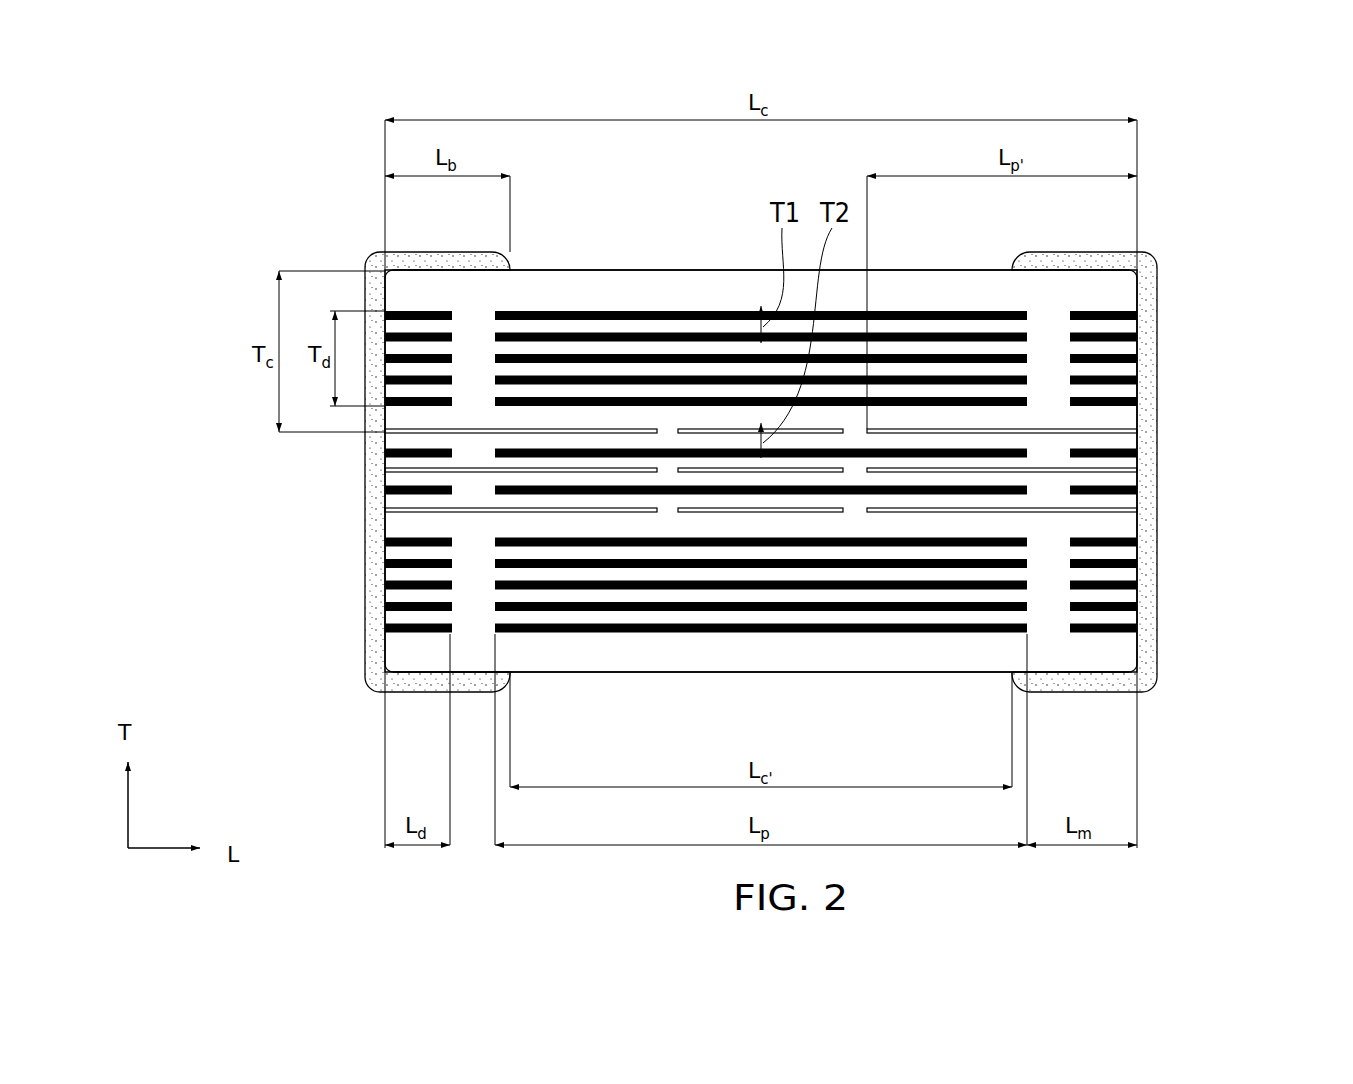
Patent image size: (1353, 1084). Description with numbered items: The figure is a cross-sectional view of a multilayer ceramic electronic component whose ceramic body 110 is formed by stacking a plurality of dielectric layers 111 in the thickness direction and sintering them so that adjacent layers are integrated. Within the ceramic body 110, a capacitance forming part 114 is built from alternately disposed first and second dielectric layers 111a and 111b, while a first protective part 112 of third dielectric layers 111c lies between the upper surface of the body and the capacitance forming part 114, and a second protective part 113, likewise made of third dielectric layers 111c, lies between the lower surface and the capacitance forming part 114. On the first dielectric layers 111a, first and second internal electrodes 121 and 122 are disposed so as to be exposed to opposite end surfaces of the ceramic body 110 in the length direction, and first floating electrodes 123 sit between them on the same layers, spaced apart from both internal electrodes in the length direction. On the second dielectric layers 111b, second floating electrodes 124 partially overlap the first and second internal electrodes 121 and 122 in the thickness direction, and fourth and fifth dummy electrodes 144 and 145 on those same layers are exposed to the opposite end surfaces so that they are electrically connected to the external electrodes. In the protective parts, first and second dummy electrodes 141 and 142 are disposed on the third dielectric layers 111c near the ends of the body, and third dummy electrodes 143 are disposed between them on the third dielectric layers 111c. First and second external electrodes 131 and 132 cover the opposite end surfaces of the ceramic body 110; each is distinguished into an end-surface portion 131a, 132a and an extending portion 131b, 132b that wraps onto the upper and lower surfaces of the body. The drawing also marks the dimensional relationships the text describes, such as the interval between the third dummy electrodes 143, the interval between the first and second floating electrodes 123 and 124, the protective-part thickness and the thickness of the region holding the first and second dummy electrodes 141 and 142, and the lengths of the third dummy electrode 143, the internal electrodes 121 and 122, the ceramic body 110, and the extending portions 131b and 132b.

The ceramic body 110 is at (706, 256).
The dielectric layers 111 is at (265, 442).
The first dielectric layers 111a is at (397, 440).
The second dielectric layers 111b is at (395, 462).
The third dielectric layers 111c is at (396, 415).
The first protective part 112 is at (558, 292).
The second protective part 113 is at (872, 648).
The capacitance forming part 114 is at (1118, 443).
The first internal electrode 121 is at (568, 513).
The second internal electrode 122 is at (935, 513).
The first floating electrode 123 is at (760, 513).
The second floating electrode 124 is at (670, 494).
The first external electrode 131 is at (265, 597).
The end-surface portion of first external electrode 131a is at (376, 611).
The extending portion of first external electrode 131b is at (425, 683).
The second external electrode 132 is at (1258, 217).
The end-surface portion of second external electrode 132a is at (1148, 383).
The extending portion of second external electrode 132b is at (1096, 263).
The first dummy electrode 141 is at (421, 311).
The second dummy electrode 142 is at (1089, 311).
The third dummy electrode 143 is at (643, 311).
The fourth dummy electrode 144 is at (425, 494).
The fifth dummy electrode 145 is at (1115, 494).